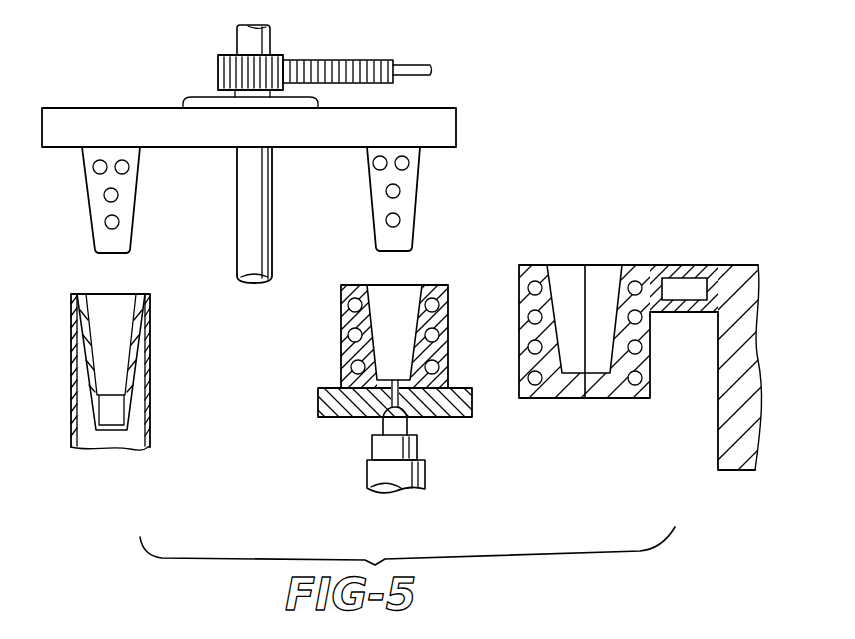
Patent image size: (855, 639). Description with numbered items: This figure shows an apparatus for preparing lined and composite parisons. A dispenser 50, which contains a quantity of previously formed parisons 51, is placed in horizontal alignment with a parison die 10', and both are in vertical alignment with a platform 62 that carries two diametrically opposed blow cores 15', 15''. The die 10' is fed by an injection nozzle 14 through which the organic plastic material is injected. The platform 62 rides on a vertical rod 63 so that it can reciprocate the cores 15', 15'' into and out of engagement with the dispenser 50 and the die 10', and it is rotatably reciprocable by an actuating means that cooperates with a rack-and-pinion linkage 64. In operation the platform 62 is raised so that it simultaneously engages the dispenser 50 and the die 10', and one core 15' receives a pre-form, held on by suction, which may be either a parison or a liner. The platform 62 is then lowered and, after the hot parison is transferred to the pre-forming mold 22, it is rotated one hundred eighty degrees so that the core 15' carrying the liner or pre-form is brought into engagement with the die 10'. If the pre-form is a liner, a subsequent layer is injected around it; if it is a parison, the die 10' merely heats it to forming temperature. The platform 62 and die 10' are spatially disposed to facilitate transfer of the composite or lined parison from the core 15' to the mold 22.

The rack-and-pinion linkage 64 is at (340, 56).
The platform 62 is at (456, 122).
The vertical rod 63 is at (263, 218).
The blow core 15' is at (142, 200).
The blow core 15'' is at (428, 199).
The dispenser 50 is at (150, 382).
The previously formed parisons 51 is at (147, 303).
The parison die 10' is at (428, 329).
The injection nozzle 14 is at (375, 470).
The mold 22 is at (622, 390).